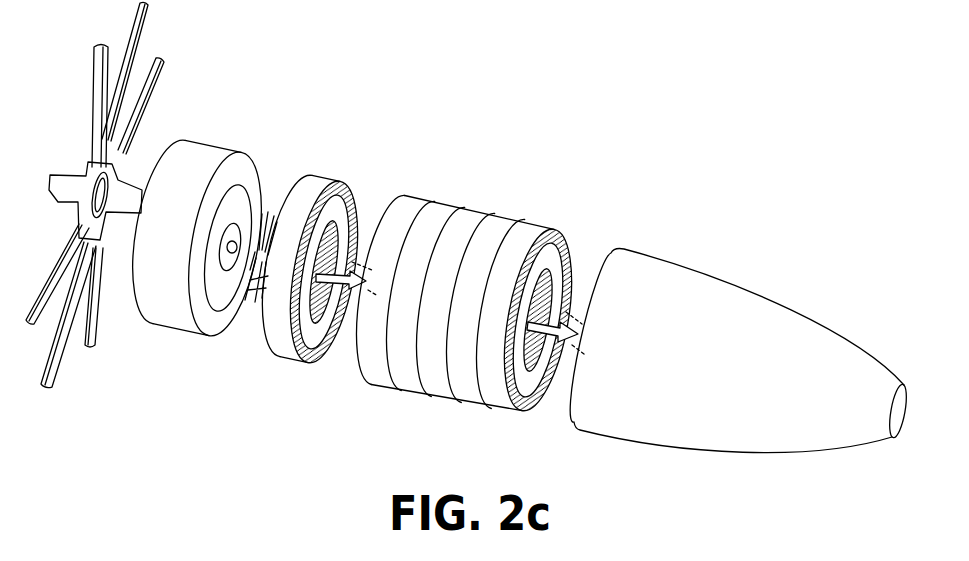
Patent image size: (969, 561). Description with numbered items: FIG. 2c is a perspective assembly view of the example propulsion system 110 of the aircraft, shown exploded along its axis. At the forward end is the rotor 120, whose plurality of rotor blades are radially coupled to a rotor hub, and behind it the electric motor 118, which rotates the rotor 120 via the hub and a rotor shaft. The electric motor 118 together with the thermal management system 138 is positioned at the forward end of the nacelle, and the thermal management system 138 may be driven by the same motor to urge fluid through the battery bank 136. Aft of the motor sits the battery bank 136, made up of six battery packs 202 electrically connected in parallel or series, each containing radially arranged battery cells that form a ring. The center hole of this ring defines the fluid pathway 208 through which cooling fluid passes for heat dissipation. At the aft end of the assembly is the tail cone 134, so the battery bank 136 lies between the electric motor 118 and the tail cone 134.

The propulsion system 110 is at (768, 148).
The rotor 120 is at (160, 60).
The electric motor 118 is at (226, 143).
The thermal management system 138 is at (205, 347).
The battery bank 136 is at (293, 130).
The battery packs 202 is at (340, 176).
The fluid pathway 208 is at (558, 362).
The tail cone 134 is at (733, 278).